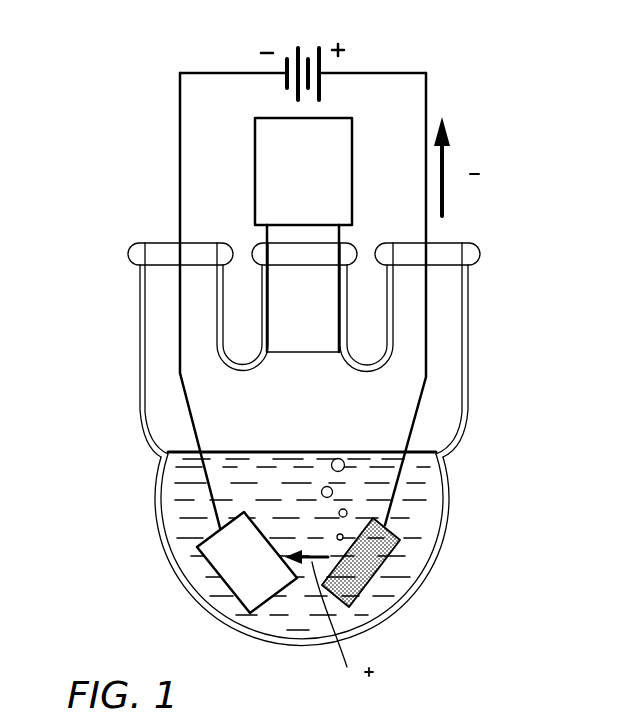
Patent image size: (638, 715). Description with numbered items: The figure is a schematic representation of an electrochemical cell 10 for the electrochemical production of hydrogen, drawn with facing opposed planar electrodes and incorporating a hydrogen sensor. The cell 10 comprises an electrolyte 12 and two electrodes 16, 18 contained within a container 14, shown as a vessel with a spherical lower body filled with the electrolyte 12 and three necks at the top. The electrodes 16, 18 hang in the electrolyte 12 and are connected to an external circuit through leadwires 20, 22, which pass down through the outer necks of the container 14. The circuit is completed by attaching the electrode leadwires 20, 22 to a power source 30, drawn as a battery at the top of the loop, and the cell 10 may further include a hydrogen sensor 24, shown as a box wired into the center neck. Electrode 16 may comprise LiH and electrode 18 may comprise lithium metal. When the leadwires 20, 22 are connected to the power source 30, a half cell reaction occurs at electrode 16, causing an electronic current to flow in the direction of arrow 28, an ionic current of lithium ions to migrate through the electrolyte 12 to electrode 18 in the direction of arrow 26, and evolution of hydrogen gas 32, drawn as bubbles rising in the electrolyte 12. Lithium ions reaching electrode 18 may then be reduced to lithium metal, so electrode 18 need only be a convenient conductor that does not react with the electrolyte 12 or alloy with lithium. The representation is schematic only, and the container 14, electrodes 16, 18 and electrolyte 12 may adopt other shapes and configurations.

The electrochemical cell 10 is at (322, 361).
The electrolyte 12 is at (422, 533).
The container 14 is at (452, 512).
The electrode 16 is at (388, 558).
The electrode 18 is at (203, 556).
The leadwire 20 is at (430, 340).
The leadwire 22 is at (190, 417).
The hydrogen sensor 24 is at (337, 148).
The arrow 26 is at (307, 562).
The arrow 28 is at (443, 157).
The power source 30 is at (312, 52).
The hydrogen gas 32 is at (335, 493).